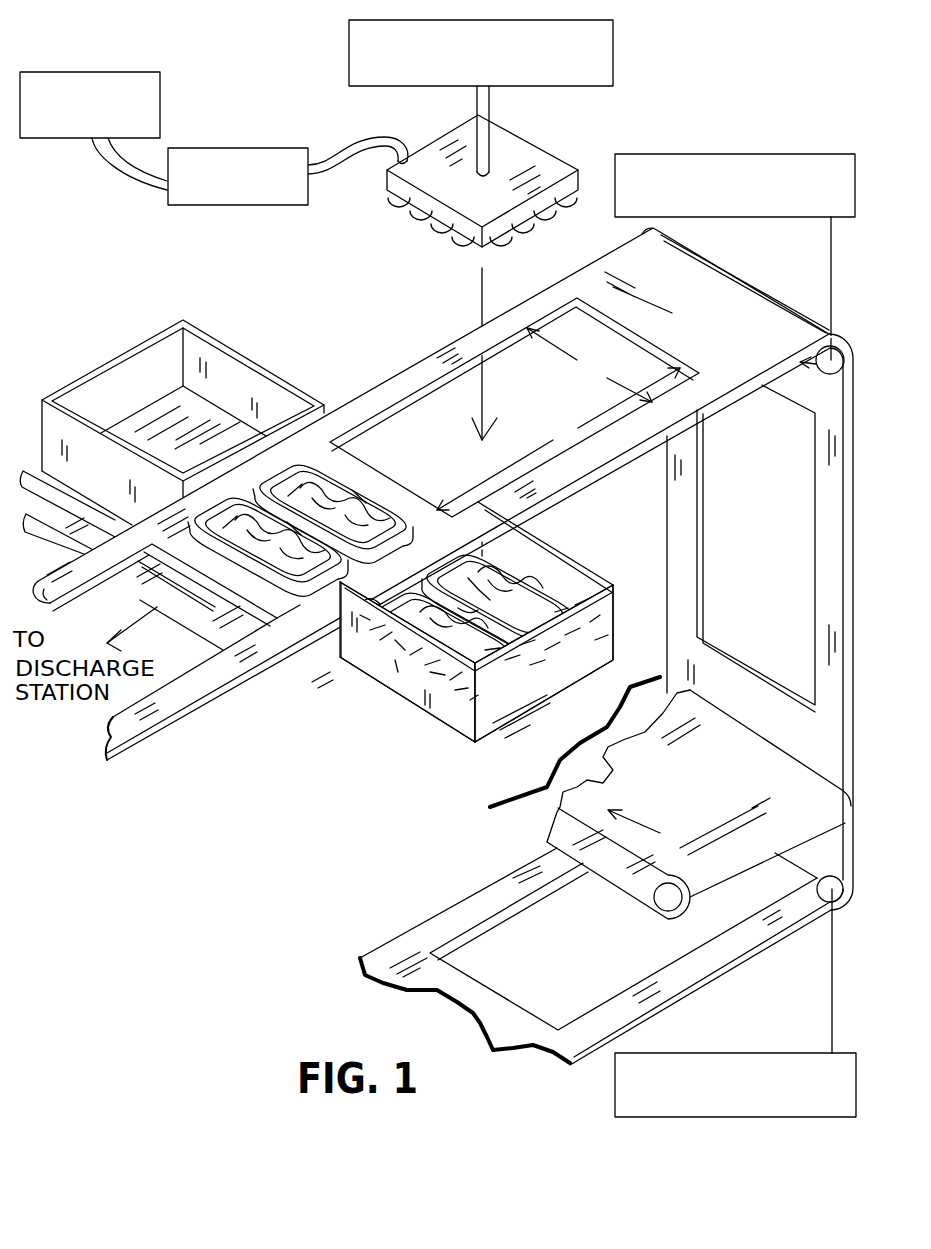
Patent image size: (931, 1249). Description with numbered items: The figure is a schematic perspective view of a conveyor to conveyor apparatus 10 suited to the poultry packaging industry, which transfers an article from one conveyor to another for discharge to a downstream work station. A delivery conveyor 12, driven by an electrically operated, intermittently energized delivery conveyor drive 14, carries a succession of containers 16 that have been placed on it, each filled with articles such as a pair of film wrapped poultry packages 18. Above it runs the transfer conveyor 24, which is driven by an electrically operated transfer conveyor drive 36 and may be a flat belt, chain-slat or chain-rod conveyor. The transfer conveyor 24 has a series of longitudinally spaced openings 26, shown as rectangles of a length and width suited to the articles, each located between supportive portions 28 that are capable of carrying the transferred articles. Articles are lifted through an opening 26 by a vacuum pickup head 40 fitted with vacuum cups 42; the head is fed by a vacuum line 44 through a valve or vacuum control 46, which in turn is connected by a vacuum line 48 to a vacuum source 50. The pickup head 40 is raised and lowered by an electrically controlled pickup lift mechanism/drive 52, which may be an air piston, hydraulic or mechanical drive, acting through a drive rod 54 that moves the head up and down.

The conveyor to conveyor apparatus 10 is at (277, 311).
The delivery conveyor 12 is at (702, 792).
The delivery conveyor drive 14 is at (746, 1052).
The containers 16 is at (617, 630).
The film wrapped poultry packages 18 is at (513, 580).
The transfer conveyor 24 is at (443, 644).
The openings 26 is at (425, 408).
The supportive portions 28 is at (701, 311).
The transfer conveyor drive 36 is at (757, 153).
The vacuum pickup head 40 is at (529, 153).
The vacuum cups 42 is at (442, 228).
The vacuum line 44 is at (358, 148).
The vacuum control 46 is at (264, 207).
The vacuum line 48 is at (127, 172).
The vacuum source 50 is at (160, 104).
The pickup lift mechanism/drive 52 is at (613, 62).
The drive rod 54 is at (476, 99).